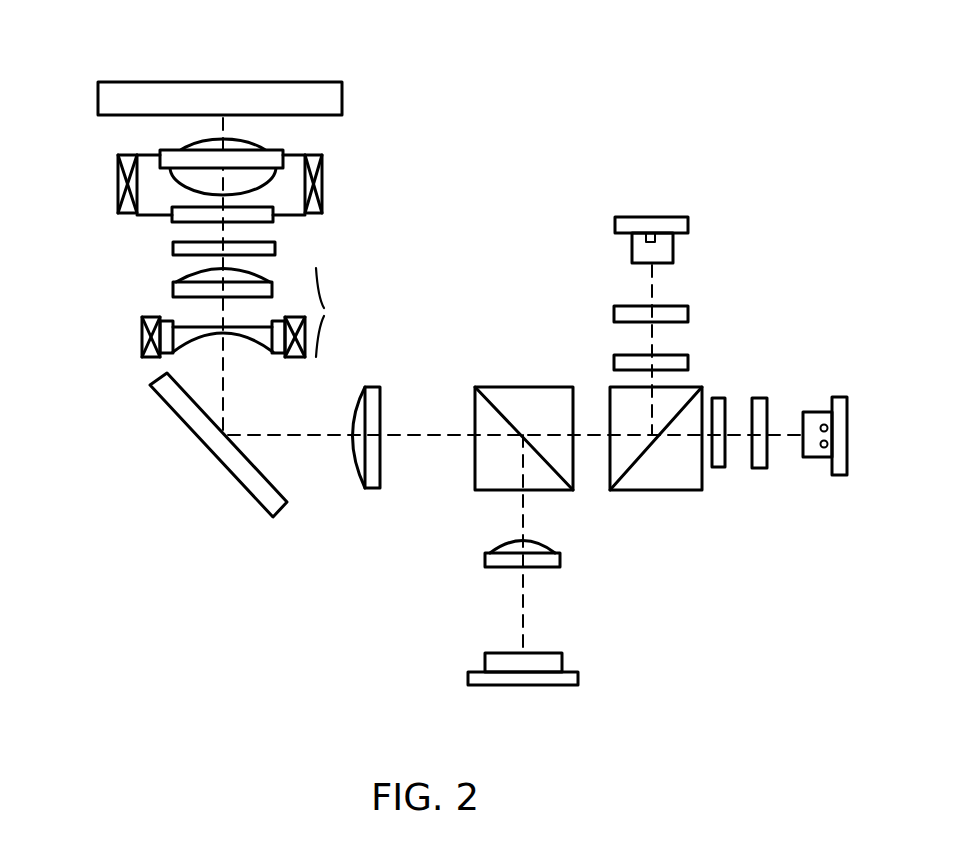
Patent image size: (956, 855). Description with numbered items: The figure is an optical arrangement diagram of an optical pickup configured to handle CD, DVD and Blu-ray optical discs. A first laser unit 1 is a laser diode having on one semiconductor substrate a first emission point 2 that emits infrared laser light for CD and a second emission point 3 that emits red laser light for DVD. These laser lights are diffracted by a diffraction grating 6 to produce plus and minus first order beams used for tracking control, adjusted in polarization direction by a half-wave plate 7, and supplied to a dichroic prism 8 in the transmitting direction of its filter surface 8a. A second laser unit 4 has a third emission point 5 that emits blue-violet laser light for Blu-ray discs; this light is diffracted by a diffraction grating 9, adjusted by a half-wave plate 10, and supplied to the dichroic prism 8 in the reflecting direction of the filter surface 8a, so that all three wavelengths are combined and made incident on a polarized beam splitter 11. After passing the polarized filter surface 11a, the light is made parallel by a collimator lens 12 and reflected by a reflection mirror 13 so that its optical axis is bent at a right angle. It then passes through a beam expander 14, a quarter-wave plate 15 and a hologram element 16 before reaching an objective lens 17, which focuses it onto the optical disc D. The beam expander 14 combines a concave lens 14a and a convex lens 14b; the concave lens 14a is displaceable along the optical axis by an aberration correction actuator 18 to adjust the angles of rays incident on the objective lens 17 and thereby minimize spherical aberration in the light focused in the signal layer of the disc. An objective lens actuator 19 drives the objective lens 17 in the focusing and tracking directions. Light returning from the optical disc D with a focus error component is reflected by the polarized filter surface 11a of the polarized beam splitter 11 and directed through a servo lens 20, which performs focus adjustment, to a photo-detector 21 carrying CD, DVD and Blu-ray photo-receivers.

The optical disc D is at (132, 90).
The first laser unit 1 is at (843, 397).
The first emission point 2 is at (824, 422).
The second emission point 3 is at (823, 457).
The second laser unit 4 is at (690, 222).
The third emission point 5 is at (653, 240).
The diffraction grating 6 is at (759, 470).
The half-wave plate 7 is at (719, 470).
The dichroic prism 8 is at (672, 490).
The filter surface 8a is at (635, 465).
The diffraction grating 9 is at (688, 318).
The half-wave plate 10 is at (688, 362).
The polarized beam splitter 11 is at (526, 387).
The polarized filter surface 11a is at (490, 408).
The collimator lens 12 is at (370, 490).
The reflection mirror 13 is at (277, 484).
The beam expander 14 is at (324, 312).
The concave lens 14a is at (212, 327).
The convex lens 14b is at (170, 290).
The quarter-wave plate 15 is at (274, 256).
The hologram element 16 is at (268, 225).
The objective lens 17 is at (160, 157).
The aberration correction actuator 18 is at (140, 345).
The objective lens actuator 19 is at (320, 187).
The servo lens 20 is at (485, 557).
The photo-detector 21 is at (468, 676).